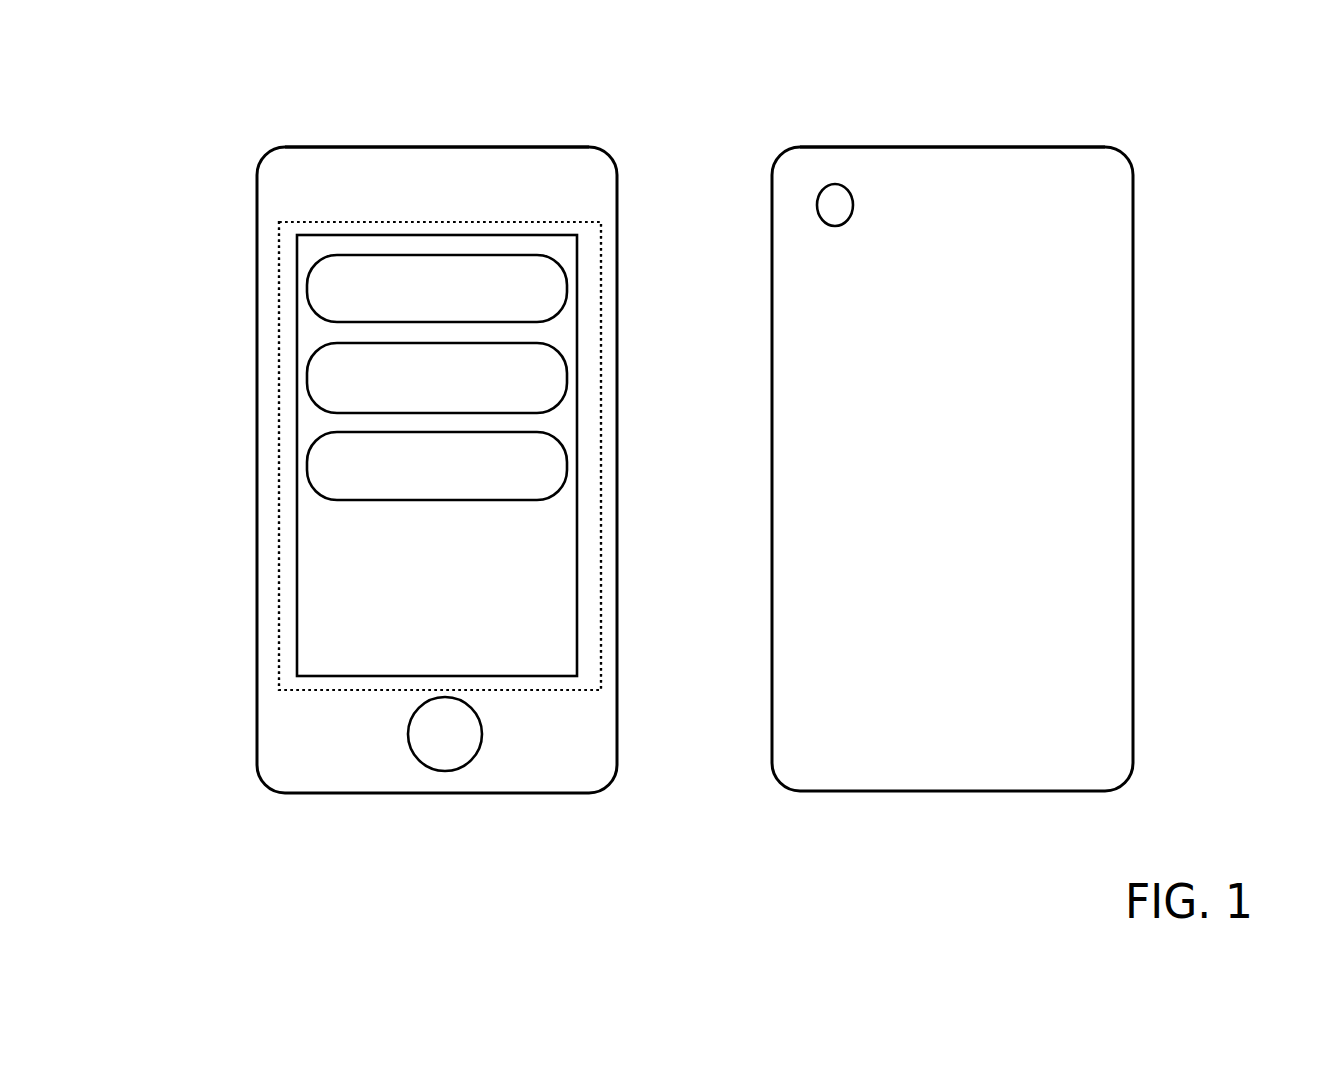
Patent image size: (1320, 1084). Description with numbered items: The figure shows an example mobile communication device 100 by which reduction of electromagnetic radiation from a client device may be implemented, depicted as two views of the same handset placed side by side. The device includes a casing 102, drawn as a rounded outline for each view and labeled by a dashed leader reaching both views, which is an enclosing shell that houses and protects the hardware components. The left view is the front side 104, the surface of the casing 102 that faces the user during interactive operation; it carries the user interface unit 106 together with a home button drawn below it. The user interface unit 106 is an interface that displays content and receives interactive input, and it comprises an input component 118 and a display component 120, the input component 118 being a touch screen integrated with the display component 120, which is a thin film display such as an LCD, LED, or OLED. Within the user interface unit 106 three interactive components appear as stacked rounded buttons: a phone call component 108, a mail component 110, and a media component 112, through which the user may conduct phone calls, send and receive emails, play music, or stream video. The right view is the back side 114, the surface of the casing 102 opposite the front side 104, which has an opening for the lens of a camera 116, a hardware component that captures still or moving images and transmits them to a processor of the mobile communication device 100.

The mobile communication device 100 is at (206, 100).
The casing 102 is at (953, 791).
The front side 104 is at (440, 146).
The user interface unit 106 is at (603, 587).
The phone call component 108 is at (437, 288).
The mail component 110 is at (437, 378).
The media component 112 is at (437, 466).
The back side 114 is at (960, 147).
The camera 116 is at (837, 184).
The input component 118 is at (297, 560).
The display component 120 is at (378, 456).